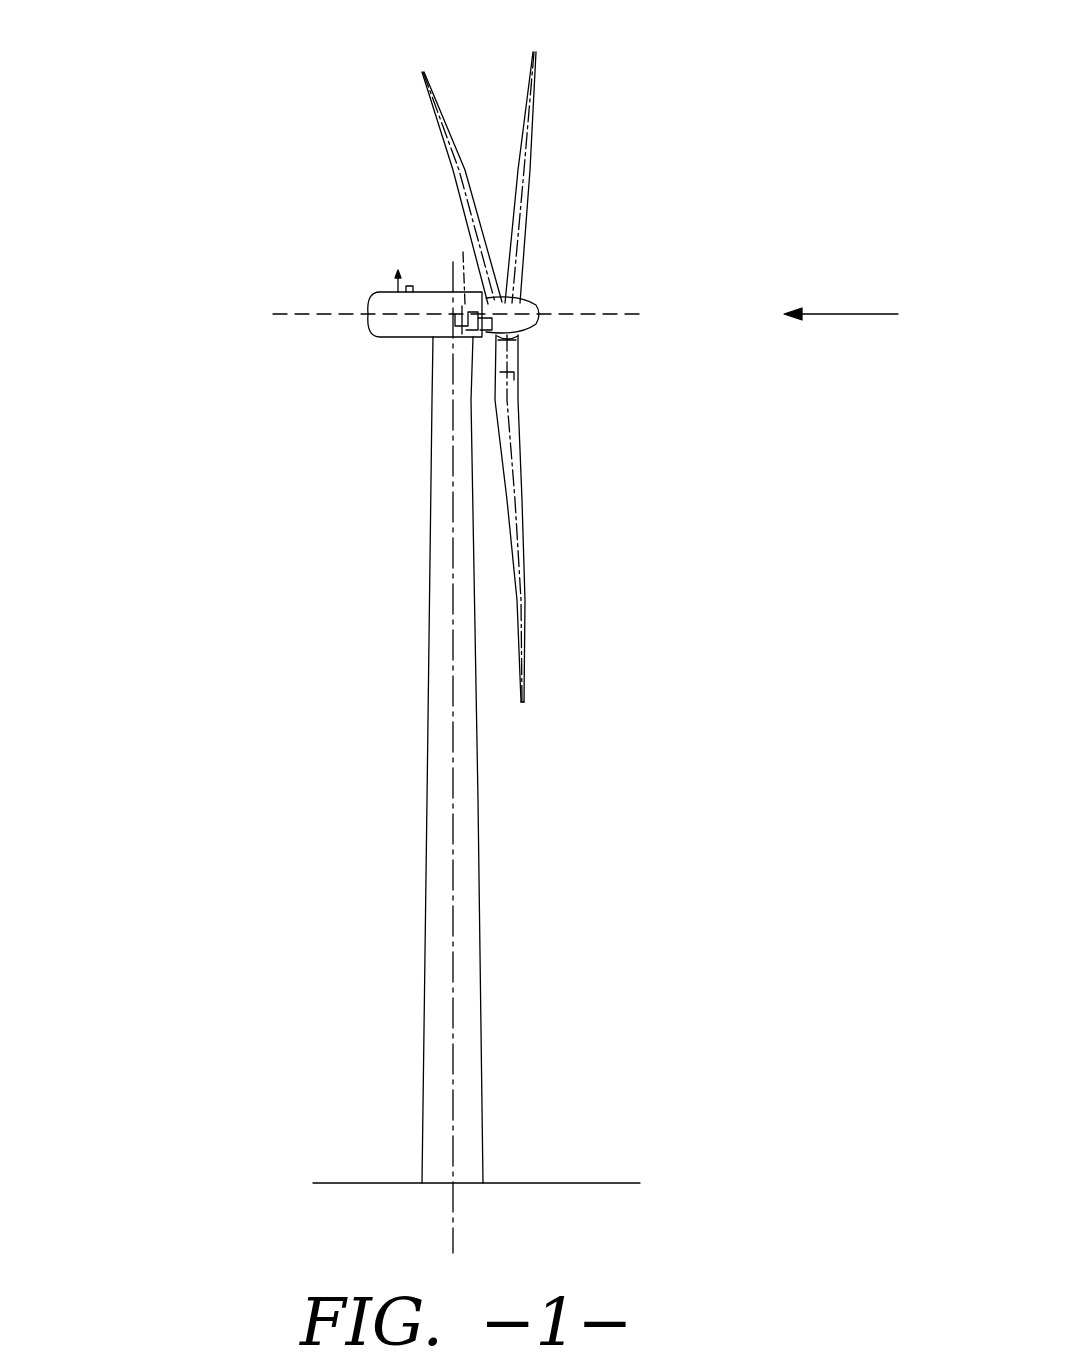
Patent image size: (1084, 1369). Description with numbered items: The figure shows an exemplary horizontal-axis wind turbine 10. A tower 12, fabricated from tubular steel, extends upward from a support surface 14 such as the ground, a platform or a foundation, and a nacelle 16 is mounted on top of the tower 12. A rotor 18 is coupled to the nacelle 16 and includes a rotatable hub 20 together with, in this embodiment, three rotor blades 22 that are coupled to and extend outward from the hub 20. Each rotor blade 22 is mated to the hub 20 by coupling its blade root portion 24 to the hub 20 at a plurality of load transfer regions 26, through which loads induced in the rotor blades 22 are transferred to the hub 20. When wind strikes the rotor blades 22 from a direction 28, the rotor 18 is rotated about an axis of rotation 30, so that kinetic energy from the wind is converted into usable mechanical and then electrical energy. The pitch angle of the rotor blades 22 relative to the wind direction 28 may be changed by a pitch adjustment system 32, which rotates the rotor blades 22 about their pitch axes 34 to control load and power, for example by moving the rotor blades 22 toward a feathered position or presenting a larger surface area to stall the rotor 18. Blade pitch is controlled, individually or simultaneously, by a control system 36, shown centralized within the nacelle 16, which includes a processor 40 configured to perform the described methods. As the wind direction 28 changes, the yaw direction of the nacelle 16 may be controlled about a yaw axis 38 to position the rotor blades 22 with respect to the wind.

The wind turbine 10 is at (188, 86).
The tower 12 is at (426, 932).
The support surface 14 is at (375, 1182).
The nacelle 16 is at (401, 340).
The rotor 18 is at (540, 210).
The rotatable hub 20 is at (532, 312).
The rotor blade 22 is at (450, 146).
The blade root portion 24 is at (515, 433).
The load transfer region 26 is at (511, 343).
The direction 28 is at (862, 313).
The axis of rotation 30 is at (602, 318).
The pitch adjustment system 32 is at (515, 381).
The pitch axis 34 is at (421, 78).
The control system 36 is at (446, 368).
The yaw axis 38 is at (458, 806).
The processor 40 is at (461, 253).